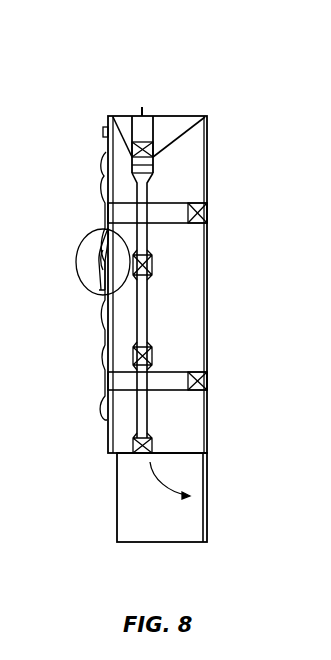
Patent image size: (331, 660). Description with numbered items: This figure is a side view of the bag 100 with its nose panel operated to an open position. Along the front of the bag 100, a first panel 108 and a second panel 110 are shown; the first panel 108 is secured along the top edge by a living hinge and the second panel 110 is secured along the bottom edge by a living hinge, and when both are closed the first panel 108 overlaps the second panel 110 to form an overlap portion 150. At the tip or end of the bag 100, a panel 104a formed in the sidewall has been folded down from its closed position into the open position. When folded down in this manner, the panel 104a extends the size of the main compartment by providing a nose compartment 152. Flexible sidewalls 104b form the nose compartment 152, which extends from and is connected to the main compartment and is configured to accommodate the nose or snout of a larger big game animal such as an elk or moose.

The bag 100 is at (108, 92).
The first panel 108 is at (106, 153).
The second panel 110 is at (106, 340).
The overlap portion 150 is at (75, 258).
The panel 104a is at (207, 490).
The flexible sidewalls 104b is at (117, 520).
The nose compartment 152 is at (192, 520).